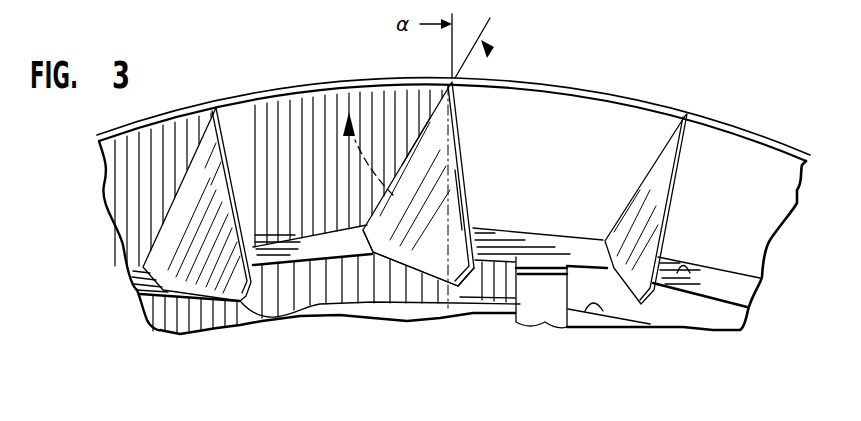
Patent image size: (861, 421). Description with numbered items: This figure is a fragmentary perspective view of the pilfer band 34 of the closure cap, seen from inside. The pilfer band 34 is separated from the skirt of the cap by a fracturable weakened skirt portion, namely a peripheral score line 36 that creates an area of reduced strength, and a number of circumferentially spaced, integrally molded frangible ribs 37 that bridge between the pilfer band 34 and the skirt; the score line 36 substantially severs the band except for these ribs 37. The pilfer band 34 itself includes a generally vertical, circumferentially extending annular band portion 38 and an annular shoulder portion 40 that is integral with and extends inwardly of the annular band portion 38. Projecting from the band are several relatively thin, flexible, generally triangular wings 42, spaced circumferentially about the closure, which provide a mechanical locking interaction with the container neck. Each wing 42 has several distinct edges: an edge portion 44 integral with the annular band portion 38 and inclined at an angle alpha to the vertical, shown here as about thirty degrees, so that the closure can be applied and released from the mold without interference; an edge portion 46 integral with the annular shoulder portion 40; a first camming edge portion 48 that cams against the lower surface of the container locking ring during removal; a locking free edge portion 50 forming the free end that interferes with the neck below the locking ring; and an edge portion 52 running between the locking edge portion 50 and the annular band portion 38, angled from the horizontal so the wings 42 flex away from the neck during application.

The pilfer band 34 is at (720, 103).
The score line 36 is at (600, 310).
The frangible ribs 37 is at (520, 303).
The annular band portion 38 is at (281, 137).
The annular shoulder portion 40 is at (283, 317).
The wings 42 is at (240, 204).
The edge portion 44 is at (397, 165).
The edge portion 46 is at (370, 238).
The first camming edge portion 48 is at (414, 278).
The locking free edge portion 50 is at (462, 284).
The edge portion 52 is at (463, 200).